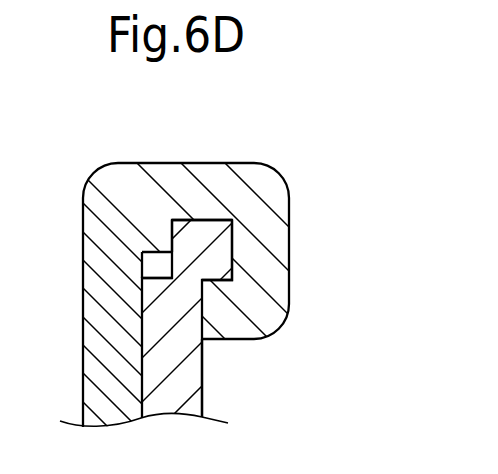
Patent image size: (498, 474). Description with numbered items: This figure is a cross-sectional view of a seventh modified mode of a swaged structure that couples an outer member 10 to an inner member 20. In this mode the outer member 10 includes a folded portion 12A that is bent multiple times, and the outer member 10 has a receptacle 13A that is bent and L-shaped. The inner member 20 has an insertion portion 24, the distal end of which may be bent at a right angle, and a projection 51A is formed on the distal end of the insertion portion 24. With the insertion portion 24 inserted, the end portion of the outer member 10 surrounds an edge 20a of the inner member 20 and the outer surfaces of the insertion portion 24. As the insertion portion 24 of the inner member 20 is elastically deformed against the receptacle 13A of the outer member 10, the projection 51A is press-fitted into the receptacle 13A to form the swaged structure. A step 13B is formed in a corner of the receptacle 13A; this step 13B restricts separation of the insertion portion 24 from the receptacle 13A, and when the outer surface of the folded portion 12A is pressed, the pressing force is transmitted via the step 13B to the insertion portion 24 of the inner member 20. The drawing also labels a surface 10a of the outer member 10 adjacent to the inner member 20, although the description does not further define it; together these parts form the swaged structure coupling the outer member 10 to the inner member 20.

The outer member 10 is at (72, 344).
The housing inner surface 10a is at (201, 350).
The folded portion 12A is at (266, 178).
The receptacle 13A is at (143, 268).
The step 13B is at (157, 237).
The inner member 20 is at (211, 382).
The edge 20a is at (205, 220).
The insertion portion 24 is at (163, 318).
The projection 51A is at (220, 263).